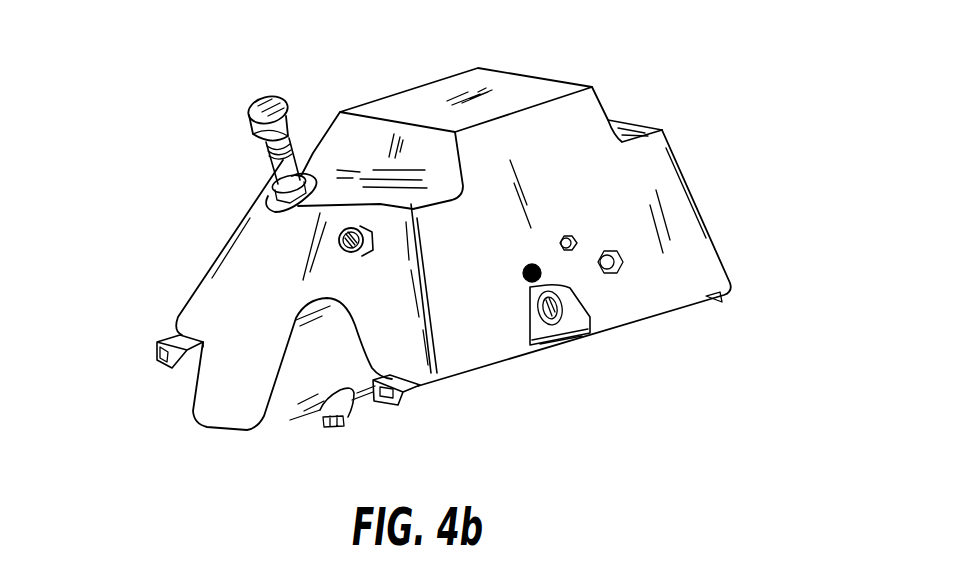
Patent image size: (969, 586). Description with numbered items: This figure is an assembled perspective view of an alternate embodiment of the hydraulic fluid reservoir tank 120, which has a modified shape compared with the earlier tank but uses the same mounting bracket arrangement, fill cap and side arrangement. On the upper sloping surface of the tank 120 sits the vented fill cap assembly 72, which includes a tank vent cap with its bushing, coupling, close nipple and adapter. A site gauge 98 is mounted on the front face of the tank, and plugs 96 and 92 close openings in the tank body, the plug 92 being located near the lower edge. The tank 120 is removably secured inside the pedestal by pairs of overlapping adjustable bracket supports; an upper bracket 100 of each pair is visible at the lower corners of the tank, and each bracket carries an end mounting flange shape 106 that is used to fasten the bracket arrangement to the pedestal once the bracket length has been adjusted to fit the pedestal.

The hydraulic fluid reservoir tank 120 is at (513, 70).
The vented fill cap assembly 72 is at (268, 156).
The site gauge 98 is at (338, 241).
The plug 96 is at (578, 243).
The upper bracket 100 is at (178, 338).
The end mounting flange shape 106 is at (150, 361).
The plug 92 is at (327, 431).